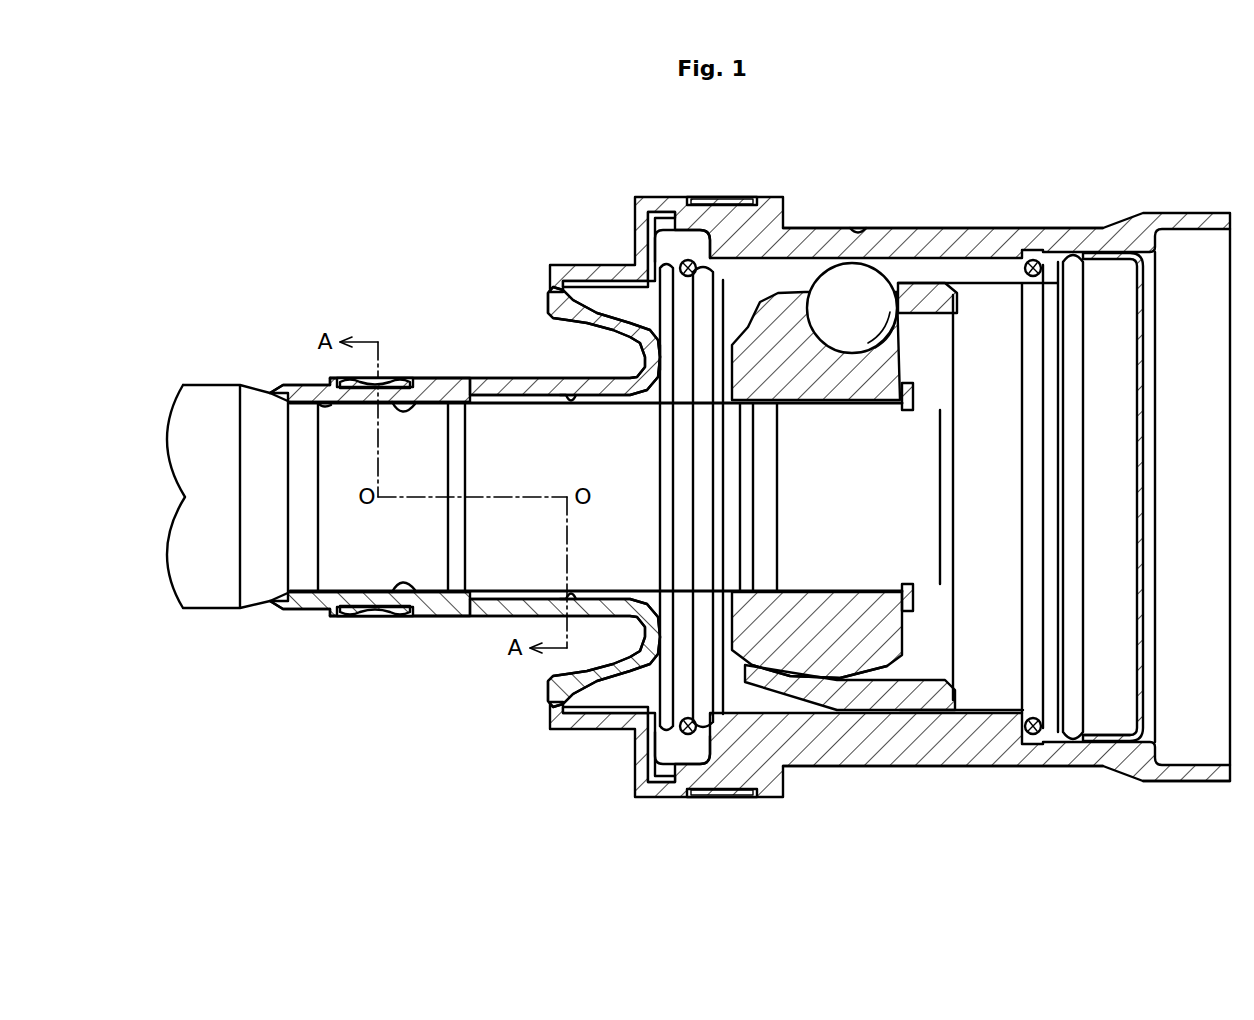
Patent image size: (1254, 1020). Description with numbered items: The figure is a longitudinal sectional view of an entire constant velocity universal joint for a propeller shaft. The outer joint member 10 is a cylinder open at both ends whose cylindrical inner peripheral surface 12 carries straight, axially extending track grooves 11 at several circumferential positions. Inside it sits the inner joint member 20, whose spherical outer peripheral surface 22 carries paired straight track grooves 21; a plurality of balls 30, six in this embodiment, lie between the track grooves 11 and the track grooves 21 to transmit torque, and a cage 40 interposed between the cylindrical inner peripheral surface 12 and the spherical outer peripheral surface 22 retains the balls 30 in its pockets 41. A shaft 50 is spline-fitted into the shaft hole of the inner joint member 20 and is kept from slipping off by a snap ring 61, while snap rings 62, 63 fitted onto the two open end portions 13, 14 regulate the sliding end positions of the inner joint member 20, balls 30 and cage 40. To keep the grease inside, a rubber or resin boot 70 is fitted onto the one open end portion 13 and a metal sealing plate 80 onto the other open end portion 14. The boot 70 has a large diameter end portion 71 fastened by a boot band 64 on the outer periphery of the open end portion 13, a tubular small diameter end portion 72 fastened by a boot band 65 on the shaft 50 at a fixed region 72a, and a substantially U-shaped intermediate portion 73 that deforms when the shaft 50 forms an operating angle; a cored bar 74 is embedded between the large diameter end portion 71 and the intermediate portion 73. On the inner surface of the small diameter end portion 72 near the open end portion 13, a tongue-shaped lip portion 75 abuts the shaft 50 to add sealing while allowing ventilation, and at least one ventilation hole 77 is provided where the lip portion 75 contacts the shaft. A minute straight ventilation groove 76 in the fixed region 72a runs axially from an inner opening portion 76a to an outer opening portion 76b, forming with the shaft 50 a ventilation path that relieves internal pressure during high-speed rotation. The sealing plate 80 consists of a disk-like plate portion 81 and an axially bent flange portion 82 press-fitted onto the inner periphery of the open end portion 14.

The outer joint member 10 is at (1172, 198).
The track grooves 11 is at (962, 270).
The cylindrical inner peripheral surface 12 is at (978, 738).
The open end portion 13 is at (723, 745).
The open end portion 14 is at (1143, 782).
The inner joint member 20 is at (908, 632).
The track grooves 21 is at (783, 345).
The spherical outer peripheral surface 22 is at (828, 668).
The balls 30 is at (818, 264).
The cage 40 is at (960, 302).
The pockets 41 is at (873, 282).
The shaft 50 is at (226, 616).
The snap ring 61 is at (918, 394).
The snap ring 62 is at (680, 740).
The snap ring 63 is at (1030, 738).
The boot band 64 is at (733, 200).
The boot band 65 is at (403, 612).
The boot 70 is at (552, 742).
The large diameter end portion 71 is at (712, 226).
The small diameter end portion 72 is at (470, 384).
The fixed region 72a is at (385, 612).
The intermediate portion 73 is at (642, 354).
The cored bar 74 is at (646, 256).
The lip portion 75 is at (567, 406).
The ventilation groove 76 is at (410, 380).
The inner opening portion 76a is at (432, 406).
The outer opening portion 76b is at (325, 382).
The ventilation hole 77 is at (573, 590).
The sealing plate 80 is at (1148, 410).
The plate portion 81 is at (1147, 529).
The flange portion 82 is at (1140, 720).